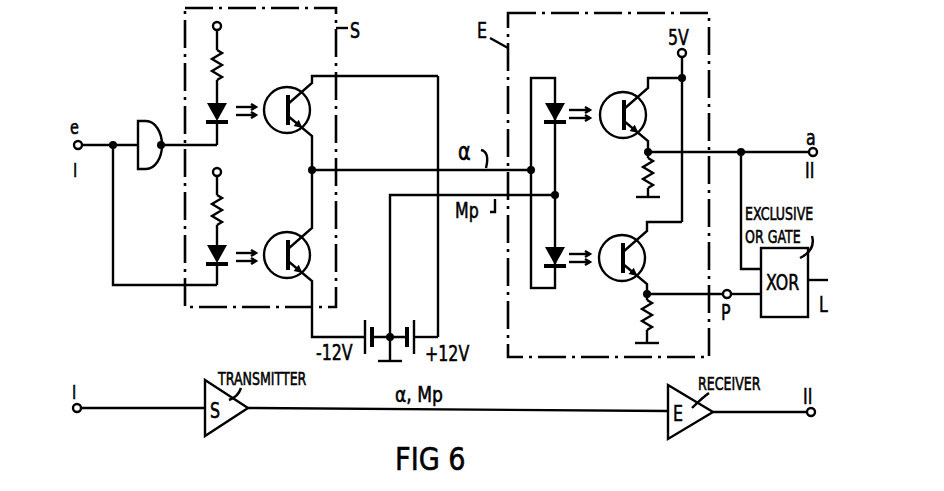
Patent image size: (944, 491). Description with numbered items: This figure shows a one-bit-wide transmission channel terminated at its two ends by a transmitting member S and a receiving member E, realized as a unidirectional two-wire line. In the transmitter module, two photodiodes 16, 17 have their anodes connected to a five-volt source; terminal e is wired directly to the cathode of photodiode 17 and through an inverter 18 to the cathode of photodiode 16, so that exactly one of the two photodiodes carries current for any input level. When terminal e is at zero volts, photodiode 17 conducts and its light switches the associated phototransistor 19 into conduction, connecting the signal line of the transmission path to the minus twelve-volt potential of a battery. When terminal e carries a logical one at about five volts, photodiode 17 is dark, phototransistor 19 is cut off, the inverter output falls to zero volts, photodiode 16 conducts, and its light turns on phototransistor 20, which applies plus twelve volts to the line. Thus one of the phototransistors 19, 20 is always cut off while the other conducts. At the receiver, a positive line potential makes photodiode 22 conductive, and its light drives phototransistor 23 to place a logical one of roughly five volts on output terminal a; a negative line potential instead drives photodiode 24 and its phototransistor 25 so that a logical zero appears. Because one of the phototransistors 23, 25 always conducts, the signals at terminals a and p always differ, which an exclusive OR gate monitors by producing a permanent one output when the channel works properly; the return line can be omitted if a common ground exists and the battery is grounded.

The photodiode 16 is at (228, 104).
The photodiode 17 is at (228, 247).
The inverter 18 is at (150, 123).
The phototransistor 19 is at (287, 232).
The phototransistor 20 is at (287, 87).
The photodiode 22 is at (565, 104).
The phototransistor 23 is at (624, 92).
The photodiode 24 is at (564, 248).
The phototransistor 25 is at (616, 235).